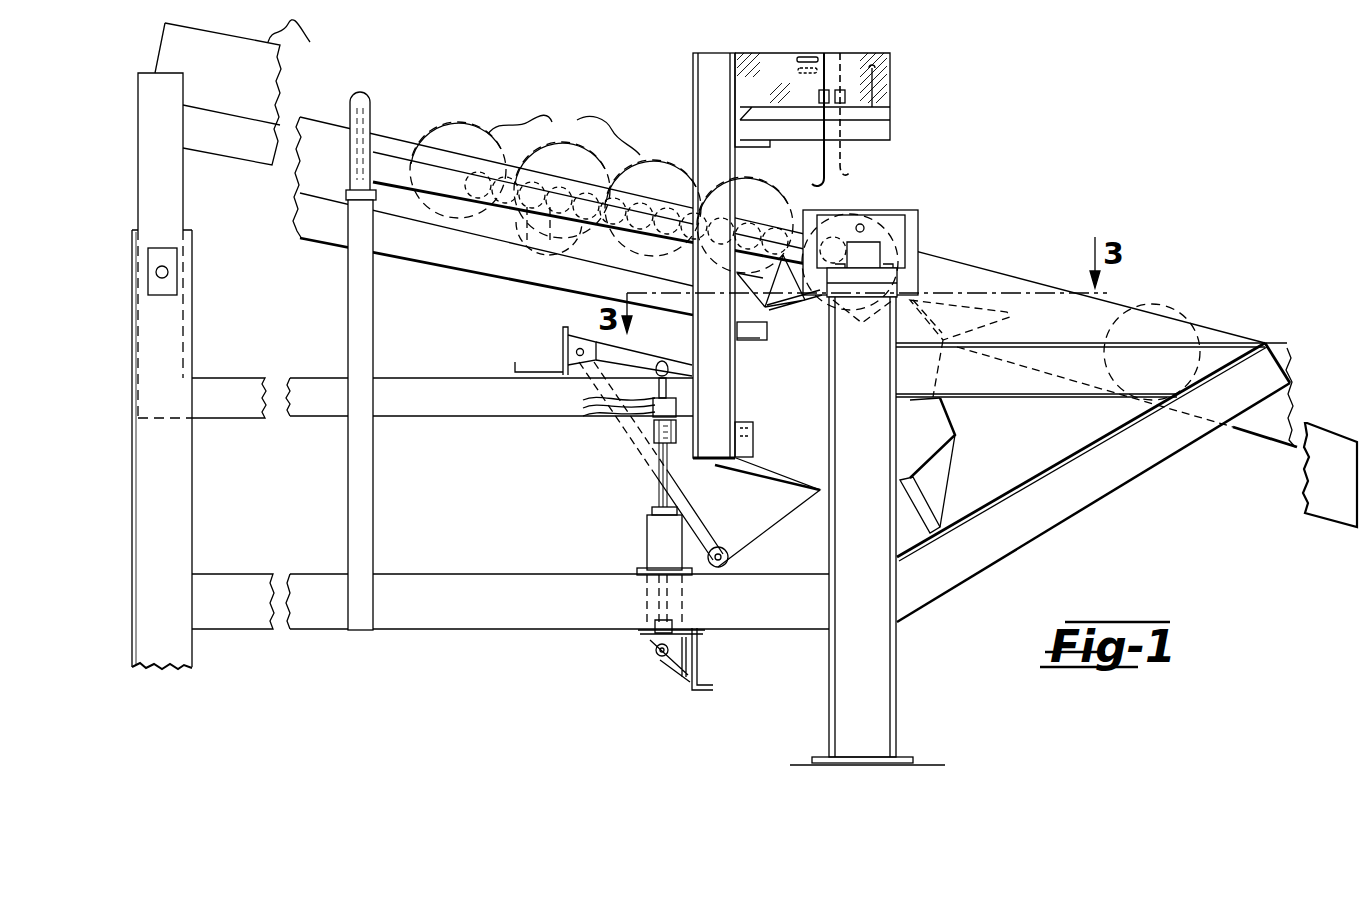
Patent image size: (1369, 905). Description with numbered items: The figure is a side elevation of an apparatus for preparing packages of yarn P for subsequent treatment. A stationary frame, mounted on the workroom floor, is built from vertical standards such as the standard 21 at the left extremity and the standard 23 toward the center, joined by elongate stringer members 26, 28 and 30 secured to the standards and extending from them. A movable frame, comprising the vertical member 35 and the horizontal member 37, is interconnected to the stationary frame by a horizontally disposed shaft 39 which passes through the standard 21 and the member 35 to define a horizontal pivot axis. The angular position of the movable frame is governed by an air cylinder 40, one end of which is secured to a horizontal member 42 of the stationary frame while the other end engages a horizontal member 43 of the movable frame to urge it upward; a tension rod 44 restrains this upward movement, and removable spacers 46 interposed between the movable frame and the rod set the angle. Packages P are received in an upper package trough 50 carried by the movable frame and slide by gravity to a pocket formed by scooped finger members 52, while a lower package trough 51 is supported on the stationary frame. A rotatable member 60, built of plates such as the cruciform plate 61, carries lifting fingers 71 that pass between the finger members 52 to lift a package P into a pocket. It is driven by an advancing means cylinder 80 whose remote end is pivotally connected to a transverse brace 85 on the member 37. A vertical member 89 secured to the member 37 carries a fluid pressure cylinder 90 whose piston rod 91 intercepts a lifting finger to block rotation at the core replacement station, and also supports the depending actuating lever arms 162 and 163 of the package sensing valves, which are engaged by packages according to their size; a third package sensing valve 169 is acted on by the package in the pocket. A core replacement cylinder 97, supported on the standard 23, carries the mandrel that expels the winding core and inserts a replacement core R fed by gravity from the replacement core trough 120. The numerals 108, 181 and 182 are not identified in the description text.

The vertical standard 21 is at (170, 503).
The vertical standard 23 is at (873, 673).
The stringer member 26 is at (497, 615).
The stringer member 28 is at (1037, 527).
The stringer member 30 is at (1010, 384).
The vertical member 35 is at (150, 155).
The horizontal member 37 is at (445, 408).
The shaft 39 is at (155, 272).
The air cylinder 40 is at (647, 537).
The horizontal member 42 is at (697, 655).
The horizontal member 43 is at (653, 445).
The tension rod 44 is at (658, 489).
The removable spacer 46 is at (584, 405).
The upper package trough 50 is at (320, 115).
The lower package trough 51 is at (1113, 303).
The finger member 52 is at (748, 287).
The rotatable member 60 is at (965, 438).
The plate 61 is at (930, 447).
The lifting finger 71 is at (923, 503).
The advancing means cylinder 80 is at (680, 348).
The transverse brace 85 is at (562, 333).
The vertical member 89 is at (728, 404).
The fluid pressure cylinder 90 is at (770, 457).
The piston rod 91 is at (755, 434).
The core replacement cylinder 97 is at (870, 255).
The housing 108 is at (897, 238).
The replacement core trough 120 is at (393, 150).
The actuating lever arm 162 is at (815, 183).
The actuating lever arm 163 is at (845, 174).
The third package sensing valve 169 is at (762, 339).
The valve body 181 is at (652, 462).
The lever link 182 is at (690, 508).
The package of yarn P is at (568, 150).
The replacement core R is at (654, 216).